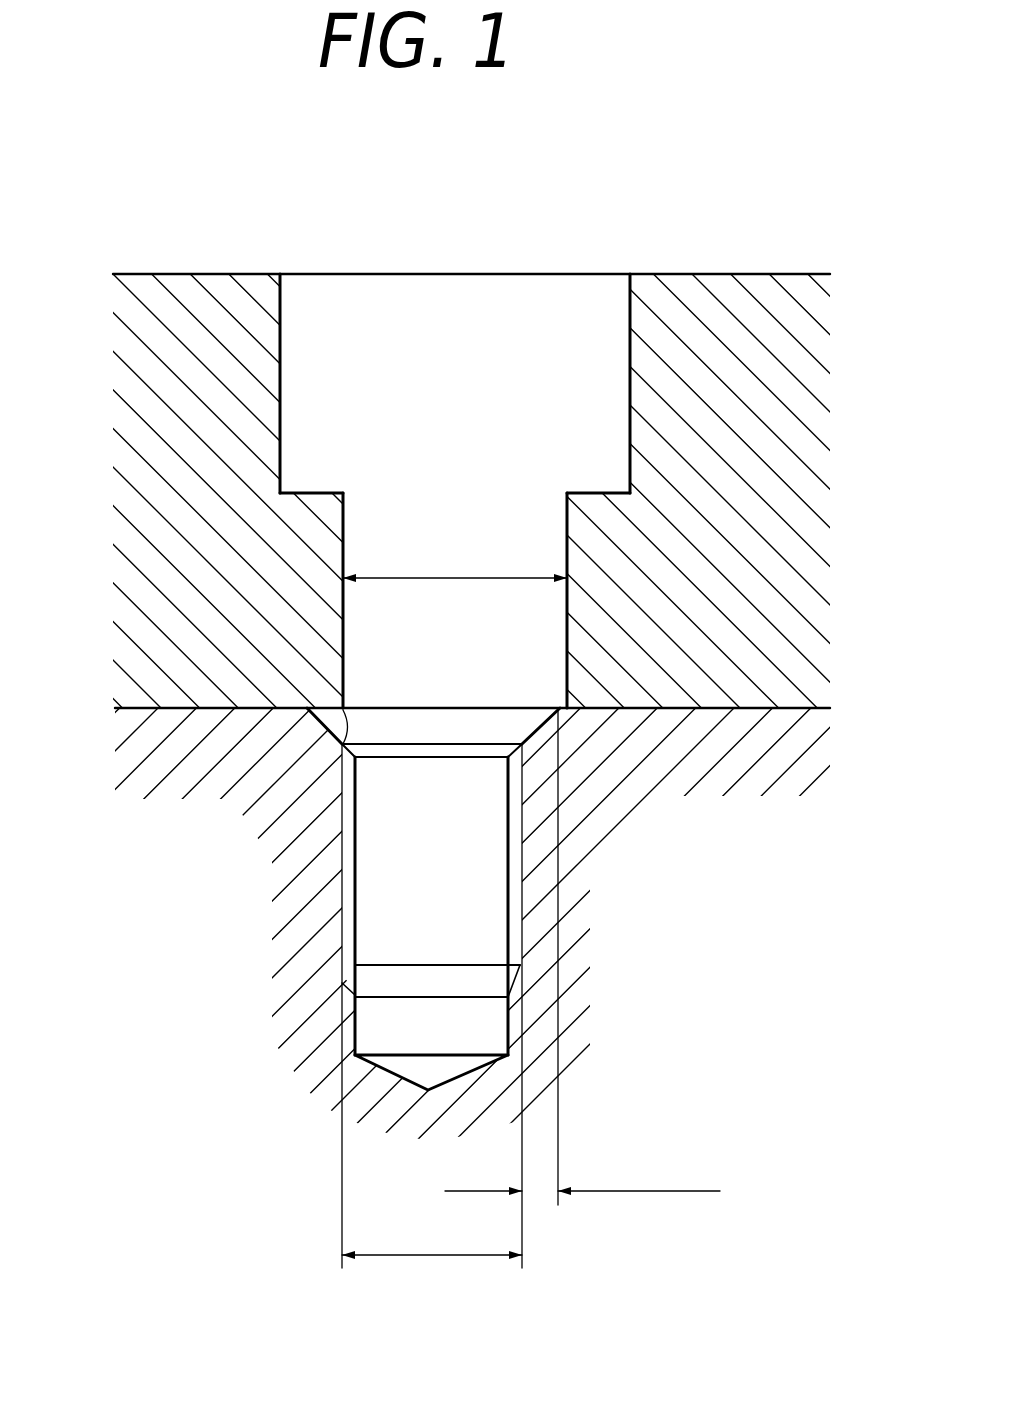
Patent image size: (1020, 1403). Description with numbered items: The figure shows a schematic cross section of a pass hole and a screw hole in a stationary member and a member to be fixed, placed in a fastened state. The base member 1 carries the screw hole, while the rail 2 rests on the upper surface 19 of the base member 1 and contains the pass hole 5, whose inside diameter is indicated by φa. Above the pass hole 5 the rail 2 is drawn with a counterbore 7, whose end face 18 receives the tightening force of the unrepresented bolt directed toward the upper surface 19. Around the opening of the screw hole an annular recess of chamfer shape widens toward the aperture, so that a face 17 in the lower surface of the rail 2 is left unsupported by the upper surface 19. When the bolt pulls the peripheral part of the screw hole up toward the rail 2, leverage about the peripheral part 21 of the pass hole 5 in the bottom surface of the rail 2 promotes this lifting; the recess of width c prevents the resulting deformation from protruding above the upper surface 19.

The base member 1 is at (713, 890).
The rail 2 is at (717, 290).
The pass hole 5 is at (520, 620).
The counterbore (bolt head recess) 7 is at (317, 293).
The face 17 is at (329, 709).
The end face of the counterbore 18 is at (300, 494).
The upper surface 19 is at (217, 707).
The peripheral part of the pass hole 21 is at (338, 740).